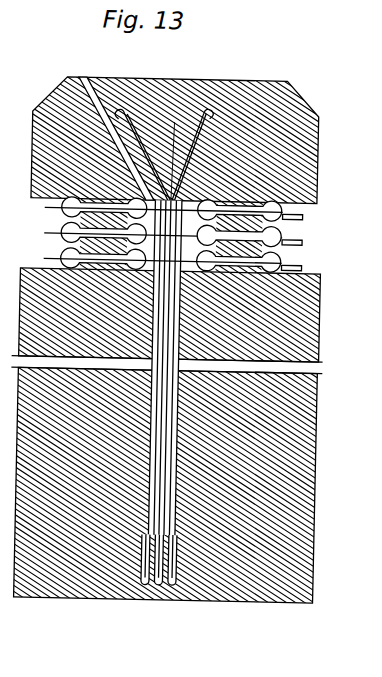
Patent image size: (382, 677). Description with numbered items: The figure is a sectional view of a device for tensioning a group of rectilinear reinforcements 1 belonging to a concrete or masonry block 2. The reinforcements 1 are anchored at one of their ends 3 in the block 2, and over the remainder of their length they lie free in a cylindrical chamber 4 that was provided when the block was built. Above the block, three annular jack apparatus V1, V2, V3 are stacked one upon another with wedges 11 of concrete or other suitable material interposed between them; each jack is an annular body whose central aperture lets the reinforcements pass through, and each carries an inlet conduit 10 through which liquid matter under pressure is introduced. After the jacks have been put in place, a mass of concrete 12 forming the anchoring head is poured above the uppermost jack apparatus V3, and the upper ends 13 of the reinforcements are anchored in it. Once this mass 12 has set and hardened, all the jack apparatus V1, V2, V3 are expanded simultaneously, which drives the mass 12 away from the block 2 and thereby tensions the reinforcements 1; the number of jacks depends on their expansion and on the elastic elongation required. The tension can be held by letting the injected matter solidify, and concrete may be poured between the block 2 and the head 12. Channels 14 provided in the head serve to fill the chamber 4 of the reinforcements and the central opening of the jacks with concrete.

The rectilinear reinforcements 1 is at (170, 466).
The concrete or masonry block 2 is at (266, 601).
The anchored ends of the reinforcements 3 is at (188, 598).
The cylindrical chamber 4 is at (181, 340).
The inlet conduit 10 is at (297, 263).
The wedges 11 is at (284, 238).
The mass of concrete 12 is at (277, 79).
The upper ends of the reinforcements 13 is at (211, 103).
The channels 14 is at (84, 80).
The jack apparatus V1 is at (148, 260).
The jack apparatus V2 is at (148, 234).
The jack apparatus V3 is at (149, 209).